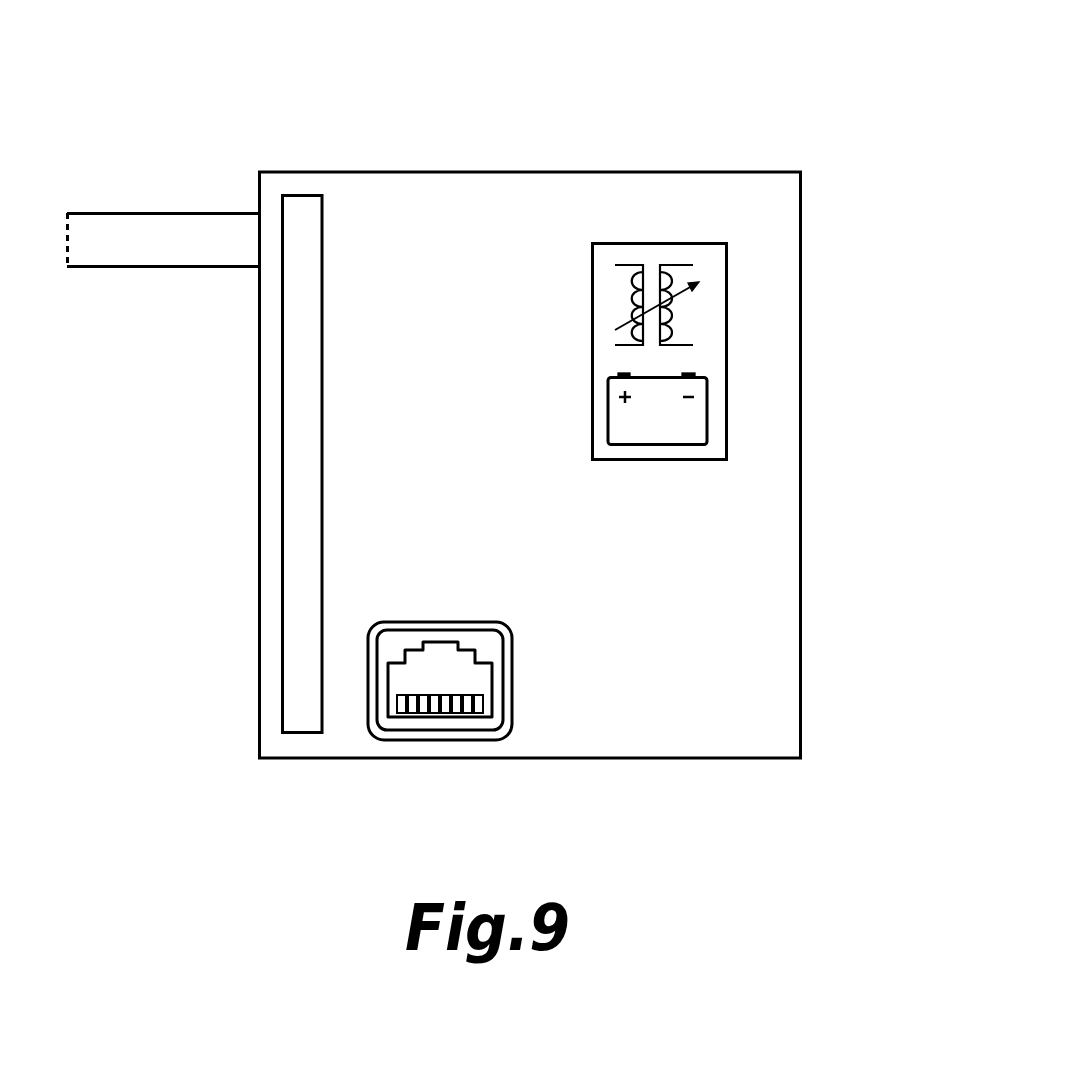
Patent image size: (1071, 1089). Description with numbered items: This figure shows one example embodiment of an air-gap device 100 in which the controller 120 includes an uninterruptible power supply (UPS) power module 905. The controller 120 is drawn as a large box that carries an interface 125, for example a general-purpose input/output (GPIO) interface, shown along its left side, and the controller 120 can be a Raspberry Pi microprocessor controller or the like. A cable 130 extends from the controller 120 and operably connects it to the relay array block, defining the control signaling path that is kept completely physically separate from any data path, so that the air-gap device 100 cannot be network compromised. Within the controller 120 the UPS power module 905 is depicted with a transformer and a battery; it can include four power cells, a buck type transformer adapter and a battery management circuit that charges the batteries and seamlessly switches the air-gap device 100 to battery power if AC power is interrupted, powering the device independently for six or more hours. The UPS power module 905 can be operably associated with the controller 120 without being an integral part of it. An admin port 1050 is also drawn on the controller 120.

The air-gap device 100 is at (631, 131).
The controller 120 is at (342, 760).
The interface 125 is at (322, 563).
The cable 130 is at (148, 268).
The UPS power module 905 is at (592, 290).
The admin port 1050 is at (513, 657).